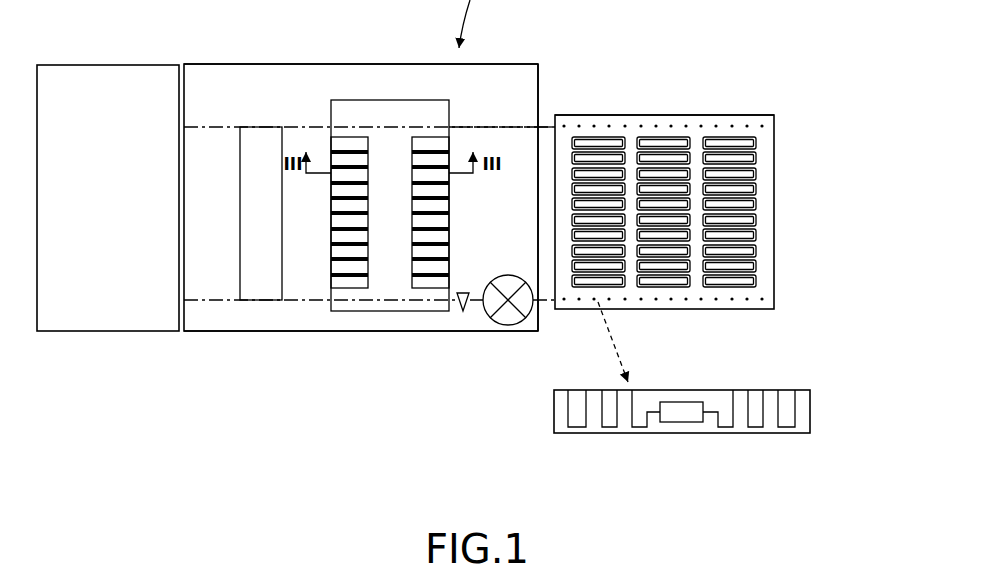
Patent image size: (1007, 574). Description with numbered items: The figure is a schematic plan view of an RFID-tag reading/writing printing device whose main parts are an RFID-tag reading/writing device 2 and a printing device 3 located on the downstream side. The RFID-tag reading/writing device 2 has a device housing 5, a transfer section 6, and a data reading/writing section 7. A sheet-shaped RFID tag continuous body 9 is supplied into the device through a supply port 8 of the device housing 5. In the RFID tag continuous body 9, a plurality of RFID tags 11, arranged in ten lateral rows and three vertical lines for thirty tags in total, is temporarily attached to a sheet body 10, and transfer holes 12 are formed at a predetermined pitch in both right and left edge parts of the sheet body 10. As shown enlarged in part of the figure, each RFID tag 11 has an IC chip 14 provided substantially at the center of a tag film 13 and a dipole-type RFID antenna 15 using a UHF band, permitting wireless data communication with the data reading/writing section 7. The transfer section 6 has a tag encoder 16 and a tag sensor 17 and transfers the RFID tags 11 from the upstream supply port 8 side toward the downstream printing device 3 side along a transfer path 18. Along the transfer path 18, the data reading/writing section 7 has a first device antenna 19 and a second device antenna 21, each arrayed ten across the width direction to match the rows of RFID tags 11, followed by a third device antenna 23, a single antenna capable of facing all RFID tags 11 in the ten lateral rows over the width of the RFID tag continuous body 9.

The RFID-tag reading/writing device 2 is at (395, 62).
The printing device 3 is at (112, 60).
The device housing 5 is at (277, 64).
The transfer section 6 is at (498, 340).
The data reading/writing section 7 is at (312, 338).
The supply port 8 is at (544, 120).
The RFID tag continuous body 9 is at (690, 112).
The sheet body 10 is at (774, 215).
The RFID tag 11 is at (665, 137).
The transfer holes 12 is at (716, 125).
The tag film 13 is at (812, 408).
The IC chip 14 is at (684, 420).
The RFID antenna 15 is at (610, 434).
The tag encoder 16 is at (533, 322).
The tag sensor 17 is at (463, 313).
The transfer path 18 is at (483, 120).
The first device antenna 19 is at (449, 212).
The second device antenna 21 is at (331, 216).
The third device antenna 23 is at (259, 302).